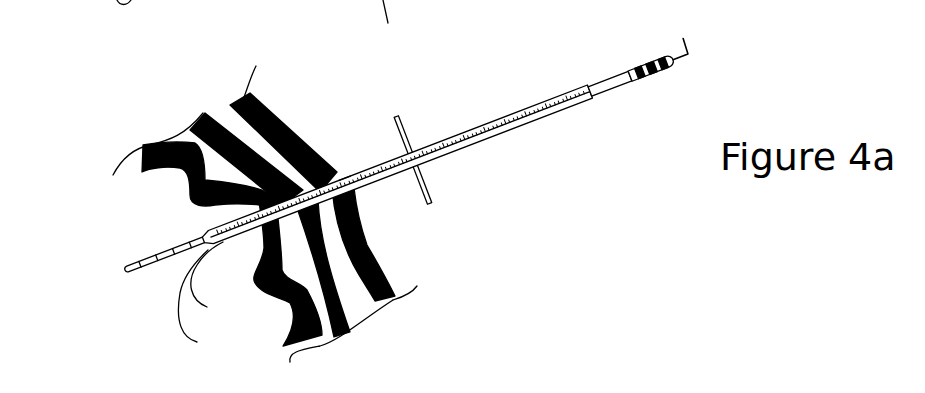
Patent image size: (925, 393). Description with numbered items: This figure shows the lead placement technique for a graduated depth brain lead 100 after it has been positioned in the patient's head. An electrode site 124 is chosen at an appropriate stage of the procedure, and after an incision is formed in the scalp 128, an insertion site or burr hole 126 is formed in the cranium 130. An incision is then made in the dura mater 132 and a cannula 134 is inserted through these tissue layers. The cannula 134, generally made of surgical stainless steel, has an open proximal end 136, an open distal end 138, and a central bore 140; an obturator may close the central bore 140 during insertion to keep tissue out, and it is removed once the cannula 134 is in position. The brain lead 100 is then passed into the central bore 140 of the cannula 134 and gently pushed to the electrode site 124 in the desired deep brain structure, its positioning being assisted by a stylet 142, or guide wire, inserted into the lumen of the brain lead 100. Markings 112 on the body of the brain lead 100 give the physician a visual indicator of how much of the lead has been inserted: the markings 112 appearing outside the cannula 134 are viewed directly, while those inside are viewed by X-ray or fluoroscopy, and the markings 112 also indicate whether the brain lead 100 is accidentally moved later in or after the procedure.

The brain lead 100 is at (481, 196).
The markings 112 is at (493, 108).
The electrode site 124 is at (88, 26).
The burr hole 126 is at (342, 175).
The scalp 128 is at (361, 212).
The cranium 130 is at (247, 100).
The dura mater 132 is at (190, 206).
The cannula 134 is at (406, 135).
The proximal end 136 is at (424, 168).
The distal end 138 is at (285, 306).
The central bore 140 is at (228, 283).
The stylet 142 is at (690, 50).